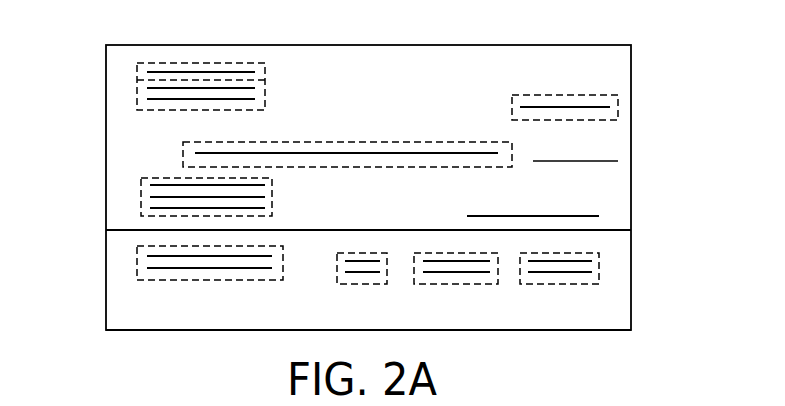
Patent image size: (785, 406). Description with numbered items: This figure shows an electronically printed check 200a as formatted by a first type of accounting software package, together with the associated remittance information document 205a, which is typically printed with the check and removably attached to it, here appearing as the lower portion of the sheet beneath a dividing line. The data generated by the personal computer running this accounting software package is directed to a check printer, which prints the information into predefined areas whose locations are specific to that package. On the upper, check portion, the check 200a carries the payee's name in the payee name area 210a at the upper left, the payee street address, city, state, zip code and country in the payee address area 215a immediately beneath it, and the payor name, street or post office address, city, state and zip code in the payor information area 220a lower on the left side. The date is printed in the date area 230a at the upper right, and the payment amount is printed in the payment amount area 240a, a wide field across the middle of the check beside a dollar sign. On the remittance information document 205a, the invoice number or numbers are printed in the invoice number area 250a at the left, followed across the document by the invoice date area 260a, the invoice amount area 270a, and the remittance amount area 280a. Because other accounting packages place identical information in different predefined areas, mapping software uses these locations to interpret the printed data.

The check 200a is at (631, 113).
The remittance information document 205a is at (631, 297).
The payee name area 210a is at (183, 63).
The payee address area 215a is at (137, 93).
The payor information area 220a is at (141, 197).
The date area 230a is at (548, 95).
The payment amount area 240a is at (280, 143).
The invoice number area 250a is at (137, 252).
The invoice date area 260a is at (367, 287).
The invoice amount area 270a is at (440, 287).
The remittance amount area 280a is at (578, 287).